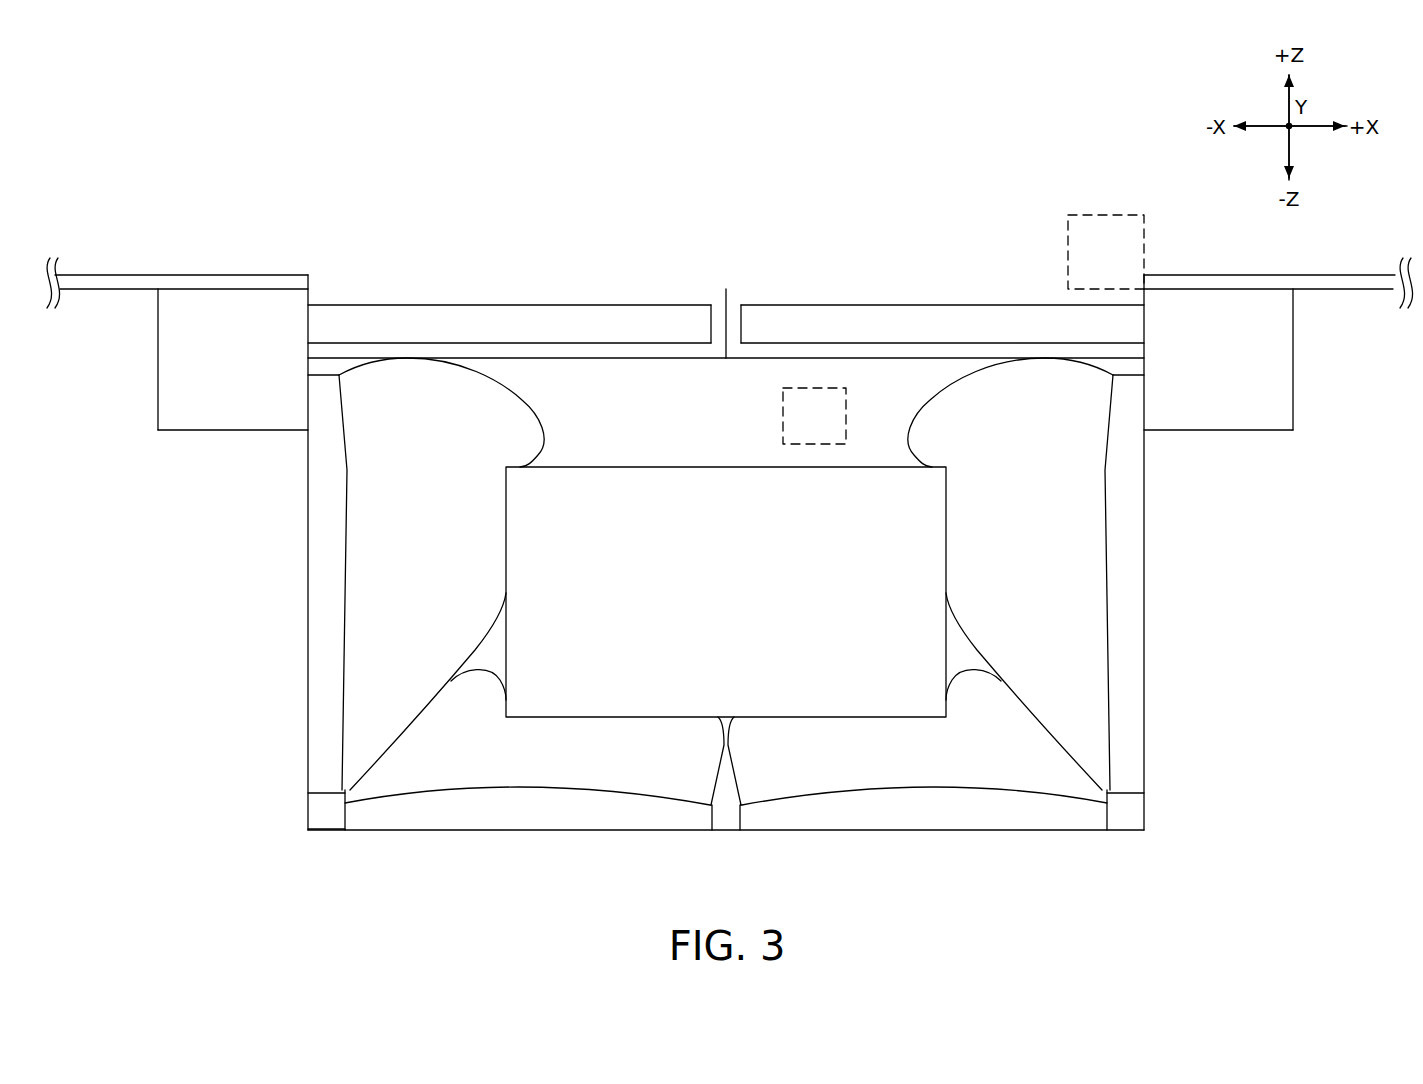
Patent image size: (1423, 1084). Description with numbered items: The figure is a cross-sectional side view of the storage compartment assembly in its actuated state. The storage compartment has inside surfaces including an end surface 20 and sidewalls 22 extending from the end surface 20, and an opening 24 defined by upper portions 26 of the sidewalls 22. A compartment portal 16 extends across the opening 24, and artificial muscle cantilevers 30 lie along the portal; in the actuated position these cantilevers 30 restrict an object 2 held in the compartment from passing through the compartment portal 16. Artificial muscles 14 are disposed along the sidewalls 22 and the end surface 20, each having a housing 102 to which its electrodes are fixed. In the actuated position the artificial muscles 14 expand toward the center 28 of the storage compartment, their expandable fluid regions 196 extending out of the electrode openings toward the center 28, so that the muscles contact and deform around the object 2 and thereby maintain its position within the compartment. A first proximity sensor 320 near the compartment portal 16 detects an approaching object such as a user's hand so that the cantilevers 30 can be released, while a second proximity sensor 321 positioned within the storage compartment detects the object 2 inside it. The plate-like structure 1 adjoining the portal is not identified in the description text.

The substrate plate 1 is at (193, 274).
The compartment portal 16 is at (328, 272).
The artificial muscle cantilevers 30 is at (383, 287).
The opening 24 is at (718, 301).
The first proximity sensor 320 is at (1106, 215).
The upper portions 26 is at (308, 351).
The expandable fluid region 196 is at (524, 402).
The second proximity sensor 321 is at (783, 410).
The object 2 is at (726, 467).
The artificial muscles 14 is at (307, 553).
The sidewalls 22 is at (308, 588).
The housing 102 is at (347, 653).
The center 28 is at (751, 654).
The end surface 20 is at (399, 830).